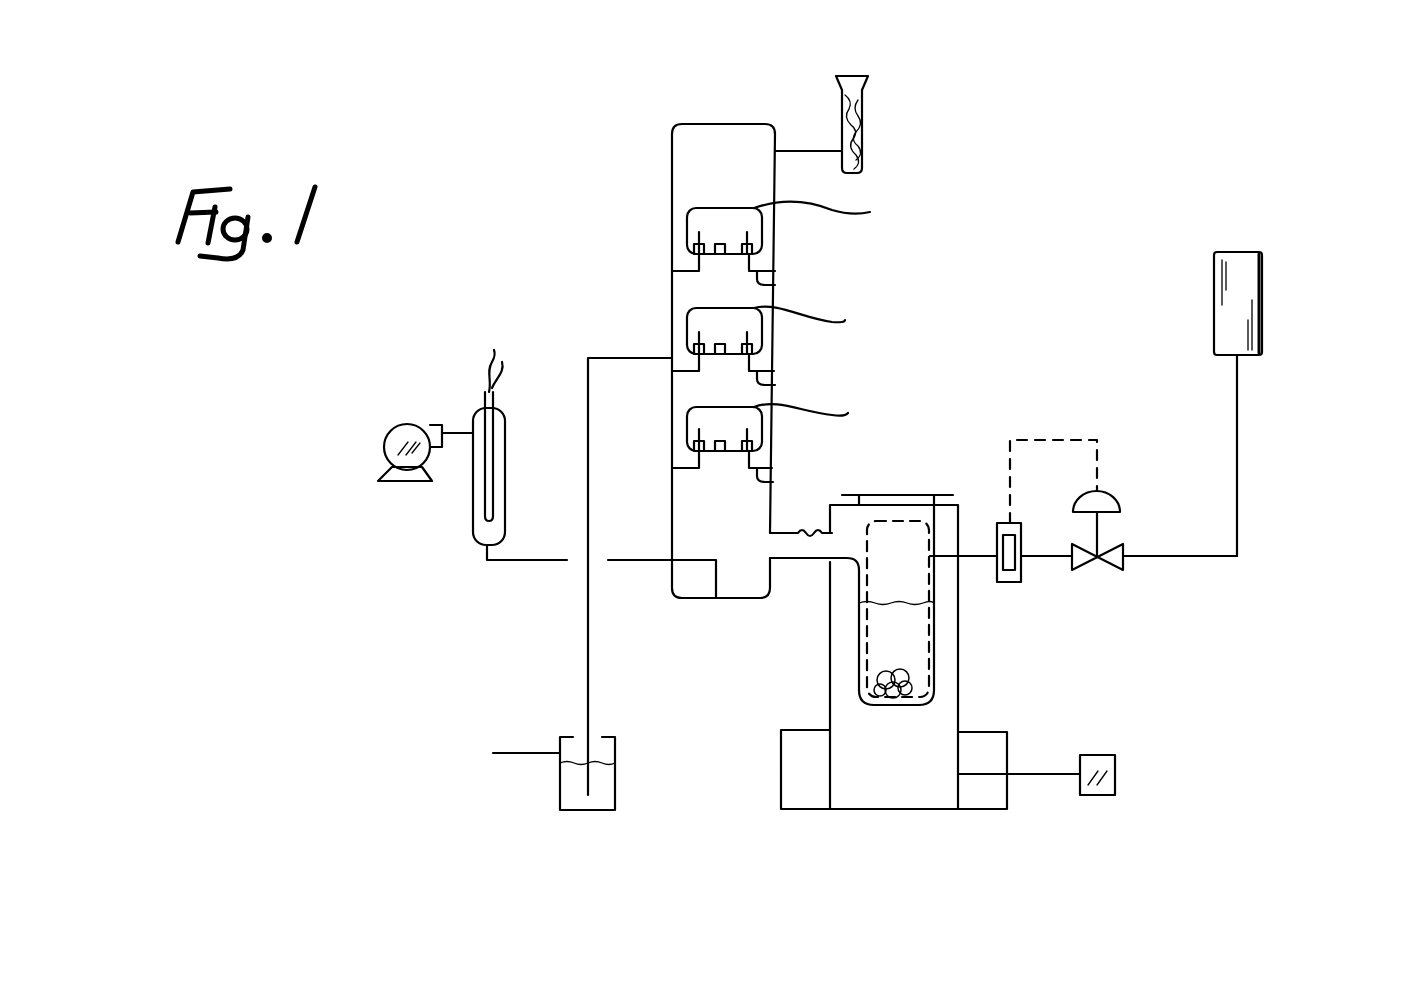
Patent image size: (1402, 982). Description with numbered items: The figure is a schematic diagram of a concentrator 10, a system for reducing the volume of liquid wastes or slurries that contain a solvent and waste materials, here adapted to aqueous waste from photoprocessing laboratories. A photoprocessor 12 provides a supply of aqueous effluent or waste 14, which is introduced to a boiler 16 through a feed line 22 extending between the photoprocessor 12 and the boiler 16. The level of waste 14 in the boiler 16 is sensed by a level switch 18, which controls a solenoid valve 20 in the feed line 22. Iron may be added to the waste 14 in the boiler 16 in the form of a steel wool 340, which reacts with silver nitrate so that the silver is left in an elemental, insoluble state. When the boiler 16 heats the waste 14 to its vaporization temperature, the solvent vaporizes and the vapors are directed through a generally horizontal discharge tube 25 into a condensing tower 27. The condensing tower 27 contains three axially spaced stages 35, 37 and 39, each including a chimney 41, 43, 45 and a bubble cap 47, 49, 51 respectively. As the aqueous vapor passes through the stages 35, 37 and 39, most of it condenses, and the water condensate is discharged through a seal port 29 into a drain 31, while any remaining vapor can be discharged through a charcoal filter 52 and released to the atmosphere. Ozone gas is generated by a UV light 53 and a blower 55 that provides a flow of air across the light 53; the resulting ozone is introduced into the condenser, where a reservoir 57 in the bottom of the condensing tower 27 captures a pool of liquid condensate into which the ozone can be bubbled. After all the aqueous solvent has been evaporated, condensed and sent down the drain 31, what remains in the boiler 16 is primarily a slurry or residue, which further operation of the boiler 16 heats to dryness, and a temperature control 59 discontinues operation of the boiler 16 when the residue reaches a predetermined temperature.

The concentrator 10 is at (570, 118).
The photoprocessor 12 is at (1272, 272).
The aqueous effluent or waste 14 is at (887, 650).
The boiler 16 is at (812, 635).
The level switch 18 is at (1015, 583).
The solenoid valve 20 is at (1100, 532).
The feed line 22 is at (1237, 455).
The discharge tube 25 is at (783, 533).
The condensing tower 27 is at (655, 130).
The seal port 29 is at (560, 795).
The drain 31 is at (521, 583).
The first stage 35 is at (655, 392).
The second stage 37 is at (650, 308).
The third stage 39 is at (660, 230).
The chimney 41 is at (773, 482).
The chimney 43 is at (775, 385).
The chimney 45 is at (775, 285).
The bubble cap 47 is at (825, 413).
The bubble cap 49 is at (822, 319).
The bubble cap 51 is at (838, 208).
The charcoal filter 52 is at (862, 125).
The UV light 53 is at (472, 525).
The blower 55 is at (407, 422).
The reservoir 57 is at (658, 538).
The temperature control 59 is at (1115, 775).
The steel wool 340 is at (913, 683).